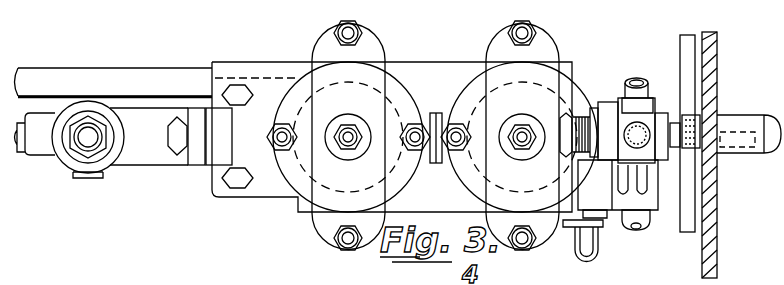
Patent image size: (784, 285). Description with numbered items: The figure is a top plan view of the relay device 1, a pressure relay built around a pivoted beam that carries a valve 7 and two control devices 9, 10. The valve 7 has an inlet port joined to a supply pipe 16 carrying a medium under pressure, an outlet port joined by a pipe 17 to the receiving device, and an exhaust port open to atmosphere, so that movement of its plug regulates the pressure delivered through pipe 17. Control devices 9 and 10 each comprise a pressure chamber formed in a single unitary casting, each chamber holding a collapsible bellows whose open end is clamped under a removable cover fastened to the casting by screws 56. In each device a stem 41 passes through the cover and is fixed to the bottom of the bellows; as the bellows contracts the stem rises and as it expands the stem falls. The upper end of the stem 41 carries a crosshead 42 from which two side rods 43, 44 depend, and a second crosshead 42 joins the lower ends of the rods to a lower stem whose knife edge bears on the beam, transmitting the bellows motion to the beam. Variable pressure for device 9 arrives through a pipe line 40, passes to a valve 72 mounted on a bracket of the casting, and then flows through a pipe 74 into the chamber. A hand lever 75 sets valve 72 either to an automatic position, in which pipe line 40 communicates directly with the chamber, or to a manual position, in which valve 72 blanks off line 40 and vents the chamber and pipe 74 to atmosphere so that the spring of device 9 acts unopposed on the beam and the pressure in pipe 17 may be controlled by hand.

The relay device 1 is at (282, 244).
The valve 7 is at (108, 165).
The control device 9 is at (587, 45).
The control device 10 is at (402, 44).
The supply pipe 16 is at (20, 150).
The pipe 17 is at (160, 72).
The pipe line 40 is at (643, 141).
The stem 41 is at (516, 131).
The crosshead 42 is at (352, 107).
The side rod 43 is at (333, 33).
The side rod 44 is at (341, 248).
The screws 56 is at (280, 148).
The valve 72 is at (651, 75).
The pipe 74 is at (599, 258).
The hand lever 75 is at (719, 238).